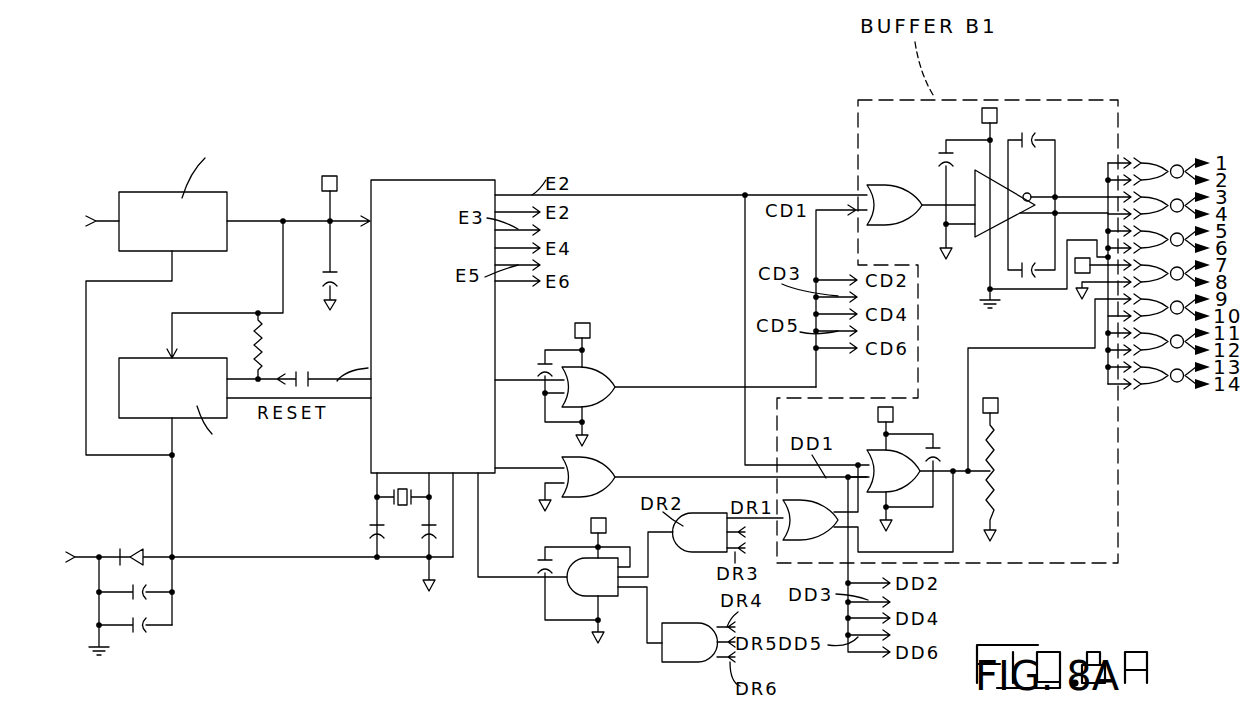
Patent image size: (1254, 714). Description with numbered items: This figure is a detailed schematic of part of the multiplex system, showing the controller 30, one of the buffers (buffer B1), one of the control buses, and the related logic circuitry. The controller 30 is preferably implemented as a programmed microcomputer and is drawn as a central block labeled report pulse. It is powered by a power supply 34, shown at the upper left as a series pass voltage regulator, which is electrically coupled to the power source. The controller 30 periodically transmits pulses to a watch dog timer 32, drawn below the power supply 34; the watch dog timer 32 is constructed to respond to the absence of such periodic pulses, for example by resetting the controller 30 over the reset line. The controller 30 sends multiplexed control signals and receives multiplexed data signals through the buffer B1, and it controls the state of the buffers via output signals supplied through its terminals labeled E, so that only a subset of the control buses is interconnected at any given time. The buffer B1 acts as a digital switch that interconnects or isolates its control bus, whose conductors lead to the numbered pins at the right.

The power supply 34 is at (188, 234).
The watch dog timer 32 is at (188, 400).
The controller 30 is at (455, 447).